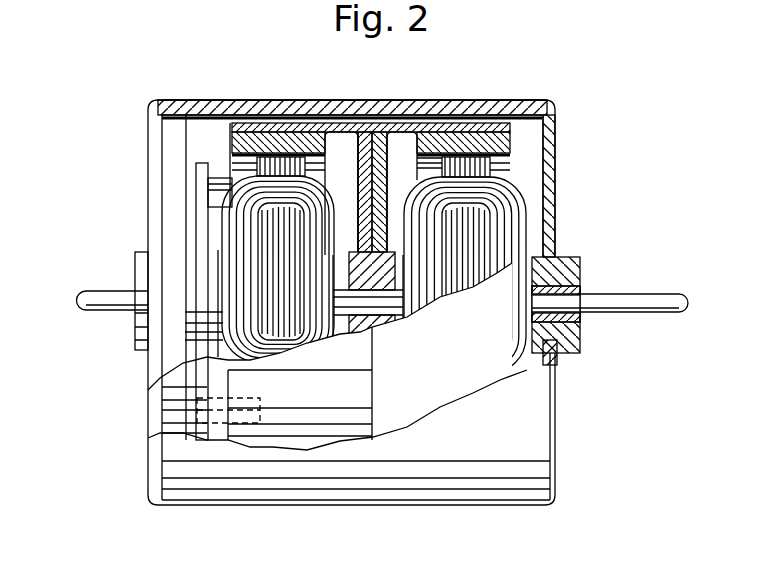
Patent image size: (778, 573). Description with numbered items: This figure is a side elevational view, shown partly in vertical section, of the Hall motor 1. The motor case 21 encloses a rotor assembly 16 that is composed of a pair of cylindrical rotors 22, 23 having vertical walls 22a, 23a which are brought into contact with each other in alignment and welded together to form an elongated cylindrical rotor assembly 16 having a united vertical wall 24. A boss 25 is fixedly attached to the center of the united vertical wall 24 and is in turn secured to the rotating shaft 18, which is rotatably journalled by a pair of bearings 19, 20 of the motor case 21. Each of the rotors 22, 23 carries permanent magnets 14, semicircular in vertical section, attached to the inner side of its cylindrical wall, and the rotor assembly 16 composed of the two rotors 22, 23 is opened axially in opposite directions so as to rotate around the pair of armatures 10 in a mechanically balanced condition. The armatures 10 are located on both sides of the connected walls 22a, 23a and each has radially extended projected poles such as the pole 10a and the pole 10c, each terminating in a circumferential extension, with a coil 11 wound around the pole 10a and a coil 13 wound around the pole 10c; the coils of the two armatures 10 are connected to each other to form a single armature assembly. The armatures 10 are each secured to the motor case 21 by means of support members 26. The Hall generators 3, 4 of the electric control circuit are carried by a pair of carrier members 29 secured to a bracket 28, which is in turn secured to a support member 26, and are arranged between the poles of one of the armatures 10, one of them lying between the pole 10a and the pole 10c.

The Hall motor 1 is at (362, 92).
The Hall generator 3 is at (230, 151).
The Hall generator 4 is at (230, 388).
The armature 10 is at (250, 222).
The projected pole 10a is at (253, 277).
The projected pole 10c is at (233, 139).
The coil 11 is at (223, 340).
The coil 13 is at (210, 218).
The permanent magnet 14 is at (221, 138).
The rotor assembly 16 is at (386, 122).
The rotating shaft 18 is at (68, 292).
The bearing 19 is at (137, 327).
The bearing 20 is at (578, 338).
The motor case 21 is at (500, 503).
The cylindrical rotor 22 is at (288, 116).
The vertical wall 22a is at (417, 150).
The cylindrical rotor 23 is at (470, 118).
The vertical wall 23a is at (352, 162).
The united vertical wall 24 is at (447, 120).
The boss 25 is at (303, 122).
The support member 26 is at (187, 343).
The bracket 28 is at (200, 197).
The carrier member 29 is at (203, 165).